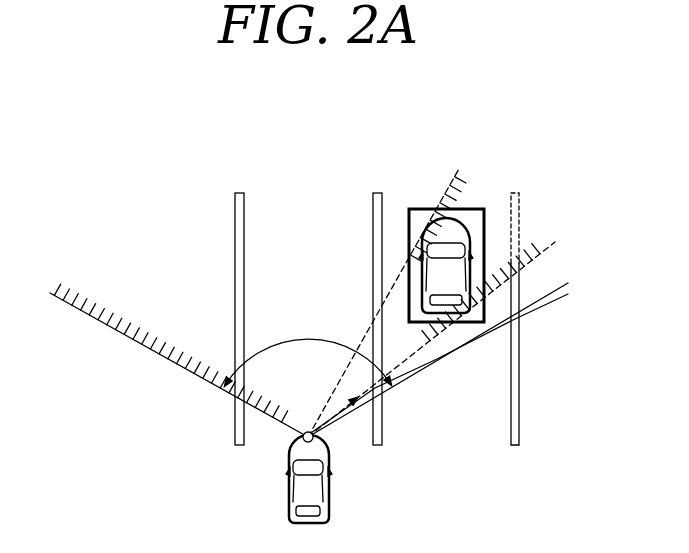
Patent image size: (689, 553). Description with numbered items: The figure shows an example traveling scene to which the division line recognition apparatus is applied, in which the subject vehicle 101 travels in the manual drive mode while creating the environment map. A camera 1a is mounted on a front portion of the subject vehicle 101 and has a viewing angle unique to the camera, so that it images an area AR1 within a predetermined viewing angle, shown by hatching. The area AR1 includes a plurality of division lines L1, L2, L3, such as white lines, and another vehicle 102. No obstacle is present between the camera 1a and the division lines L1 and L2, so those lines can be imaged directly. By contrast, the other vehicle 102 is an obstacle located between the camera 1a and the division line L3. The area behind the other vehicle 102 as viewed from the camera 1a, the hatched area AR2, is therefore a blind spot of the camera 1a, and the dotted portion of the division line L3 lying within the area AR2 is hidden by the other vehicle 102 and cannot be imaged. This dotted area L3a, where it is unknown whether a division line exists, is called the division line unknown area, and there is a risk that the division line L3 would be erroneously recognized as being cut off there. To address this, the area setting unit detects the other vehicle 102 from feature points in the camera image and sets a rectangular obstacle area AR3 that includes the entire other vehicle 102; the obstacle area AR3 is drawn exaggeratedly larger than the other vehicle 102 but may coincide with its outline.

The camera 1a is at (307, 430).
The subject vehicle 101 is at (289, 480).
The other vehicle 102 is at (425, 264).
The division line L1 is at (236, 217).
The division line L2 is at (374, 217).
The division line L3 is at (521, 383).
The division line unknown area L3a is at (520, 216).
The area within viewing angle AR1 is at (145, 290).
The blind spot area AR2 is at (495, 202).
The obstacle area AR3 is at (415, 209).